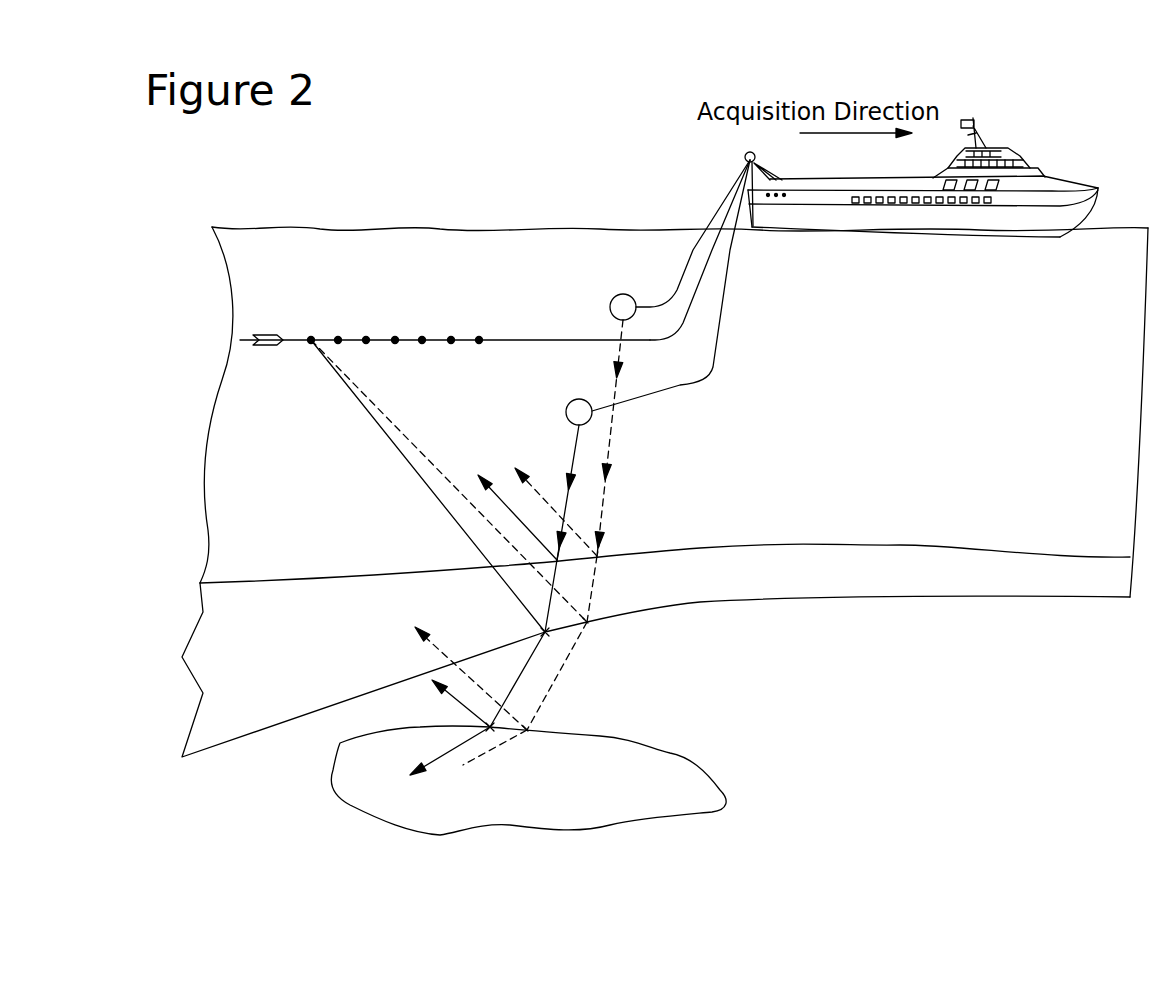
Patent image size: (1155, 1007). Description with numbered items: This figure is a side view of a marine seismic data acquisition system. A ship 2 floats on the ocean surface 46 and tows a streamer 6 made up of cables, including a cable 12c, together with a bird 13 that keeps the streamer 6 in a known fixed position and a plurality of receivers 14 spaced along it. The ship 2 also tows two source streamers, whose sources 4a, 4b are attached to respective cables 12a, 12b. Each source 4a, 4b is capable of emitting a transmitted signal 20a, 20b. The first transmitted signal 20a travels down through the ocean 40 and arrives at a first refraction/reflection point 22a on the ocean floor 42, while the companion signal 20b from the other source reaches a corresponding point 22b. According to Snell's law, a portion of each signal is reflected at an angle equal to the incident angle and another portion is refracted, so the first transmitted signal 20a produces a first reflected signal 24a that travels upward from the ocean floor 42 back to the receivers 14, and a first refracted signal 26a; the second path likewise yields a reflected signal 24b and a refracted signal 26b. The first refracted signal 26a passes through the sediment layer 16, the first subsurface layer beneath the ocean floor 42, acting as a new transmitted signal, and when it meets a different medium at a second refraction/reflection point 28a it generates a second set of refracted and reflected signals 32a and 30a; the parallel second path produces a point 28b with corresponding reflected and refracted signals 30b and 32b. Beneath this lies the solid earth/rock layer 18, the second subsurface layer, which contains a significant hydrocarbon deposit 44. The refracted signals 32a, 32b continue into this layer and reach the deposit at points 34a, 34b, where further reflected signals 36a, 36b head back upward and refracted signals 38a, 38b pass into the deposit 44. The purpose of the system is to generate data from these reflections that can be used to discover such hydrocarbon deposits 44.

The ship 2 is at (1080, 182).
The ocean surface 46 is at (310, 226).
The ocean 40 is at (911, 368).
The ocean floor 42 is at (911, 555).
The sediment layer 16 is at (964, 581).
The solid earth/rock layer 18 is at (948, 664).
The hydrocarbon deposit 44 is at (672, 755).
The cable 12a is at (690, 259).
The cable 12b is at (703, 378).
The cable 12c is at (510, 338).
The streamer 6 is at (457, 314).
The bird 13 is at (272, 331).
The receivers 14 is at (311, 337).
The source 4a is at (610, 306).
The source 4b is at (567, 404).
The first transmitted signal 20a is at (610, 433).
The transmitted signal 20b is at (568, 450).
The first refraction/reflection point 22a is at (601, 548).
The refraction/reflection point 22b is at (557, 560).
The first reflected signal 24a is at (543, 493).
The reflected signal 24b is at (500, 490).
The first refracted signal 26a is at (600, 572).
The refracted signal 26b is at (555, 572).
The second refraction/reflection point 28a is at (593, 625).
The refraction/reflection point 28b is at (540, 630).
The reflected signal 30a is at (427, 458).
The reflected signal 30b is at (428, 488).
The refracted signal 32a is at (568, 658).
The refracted signal 32b is at (530, 657).
The reflection point at reservoir top (first source) 34a is at (529, 733).
The reflection point at reservoir top (second source) 34b is at (488, 724).
The up-going reflected wave from reservoir (first source) 36a is at (437, 658).
The up-going reflected wave from reservoir (second source) 36b is at (455, 700).
The transmitted wave into reservoir (first source) 38a is at (487, 752).
The transmitted wave into reservoir (second source) 38b is at (452, 749).